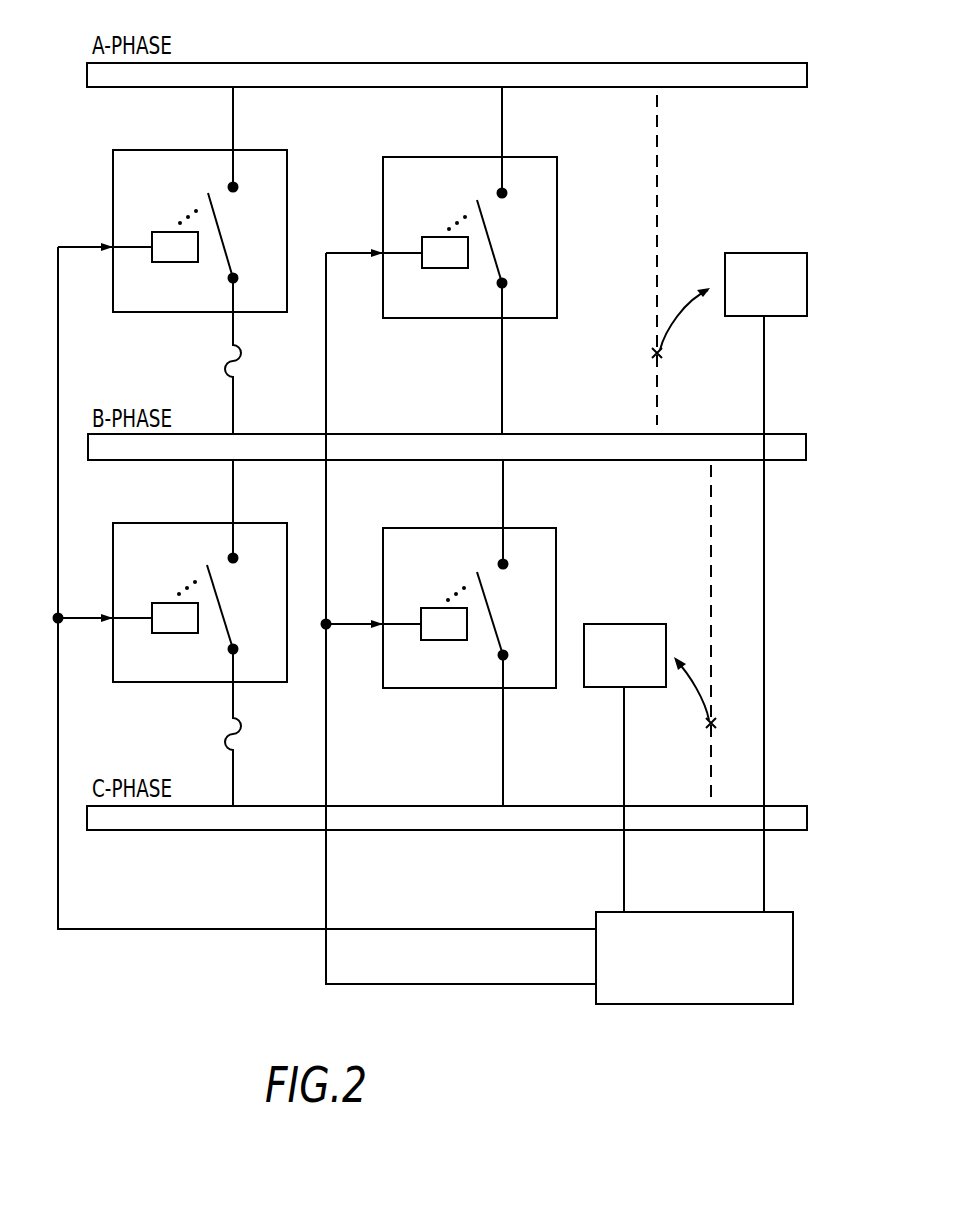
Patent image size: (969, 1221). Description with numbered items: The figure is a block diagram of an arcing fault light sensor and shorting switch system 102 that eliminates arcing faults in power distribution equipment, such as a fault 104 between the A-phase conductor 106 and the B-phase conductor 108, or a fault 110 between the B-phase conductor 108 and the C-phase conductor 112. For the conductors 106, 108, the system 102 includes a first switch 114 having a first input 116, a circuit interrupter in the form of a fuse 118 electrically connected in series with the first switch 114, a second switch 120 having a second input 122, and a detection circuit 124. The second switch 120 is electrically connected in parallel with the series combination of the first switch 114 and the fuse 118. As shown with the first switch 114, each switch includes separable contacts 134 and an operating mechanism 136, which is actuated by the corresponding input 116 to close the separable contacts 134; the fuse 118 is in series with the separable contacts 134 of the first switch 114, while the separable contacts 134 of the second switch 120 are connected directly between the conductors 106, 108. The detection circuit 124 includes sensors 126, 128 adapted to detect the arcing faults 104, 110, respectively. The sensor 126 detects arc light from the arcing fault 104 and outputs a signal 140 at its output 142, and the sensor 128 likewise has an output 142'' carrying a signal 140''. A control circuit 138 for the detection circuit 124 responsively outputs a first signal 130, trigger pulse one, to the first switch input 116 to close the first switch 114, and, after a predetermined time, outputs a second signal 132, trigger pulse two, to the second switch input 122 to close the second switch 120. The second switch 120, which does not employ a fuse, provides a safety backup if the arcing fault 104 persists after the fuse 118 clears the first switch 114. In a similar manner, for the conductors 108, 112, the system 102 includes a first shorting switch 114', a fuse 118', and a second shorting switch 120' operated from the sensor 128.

The arcing fault light sensor and shorting switch system 102 is at (138, 979).
The arcing fault 104 is at (655, 355).
The A-phase conductor 106 is at (683, 87).
The B-phase conductor 108 is at (792, 460).
The arcing fault 110 is at (717, 723).
The C-phase conductor 112 is at (792, 830).
The first switch 114 is at (200, 211).
The first shorting switch 114' is at (171, 582).
The first input 116 is at (113, 247).
The fuse 118 is at (205, 373).
The fuse 118' is at (204, 744).
The second switch 120 is at (470, 217).
The second shorting switch 120' is at (439, 587).
The second input 122 is at (383, 253).
The detection circuit 124 is at (774, 238).
The sensor 126 is at (784, 316).
The sensor 128 is at (648, 687).
The first signal 130 is at (559, 929).
The second signal 132 is at (557, 984).
The separable contacts 134 is at (218, 224).
The operating mechanism 136 is at (172, 262).
The control circuit 138 is at (727, 1004).
The signal 140 is at (804, 614).
The signal 140'' is at (590, 799).
The output 142 is at (741, 342).
The output 142'' is at (600, 713).